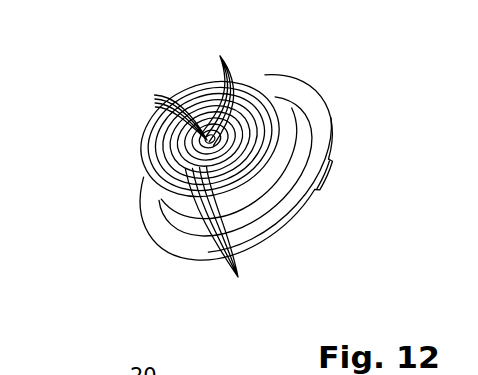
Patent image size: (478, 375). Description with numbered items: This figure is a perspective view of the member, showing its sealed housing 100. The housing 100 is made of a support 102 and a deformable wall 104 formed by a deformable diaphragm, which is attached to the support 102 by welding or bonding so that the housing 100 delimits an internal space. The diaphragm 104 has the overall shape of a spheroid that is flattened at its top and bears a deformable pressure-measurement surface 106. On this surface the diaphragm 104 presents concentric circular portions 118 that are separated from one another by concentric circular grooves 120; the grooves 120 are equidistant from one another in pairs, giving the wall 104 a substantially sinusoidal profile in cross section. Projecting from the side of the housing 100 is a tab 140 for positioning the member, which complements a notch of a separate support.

The sealed housing 100 is at (136, 72).
The support 102 is at (292, 220).
The deformable wall 104 is at (275, 78).
The deformable pressure-measurement surface 106 is at (154, 148).
The concentric circular portions 118 is at (156, 103).
The concentric circular grooves 120 is at (222, 168).
The tab 140 is at (337, 173).